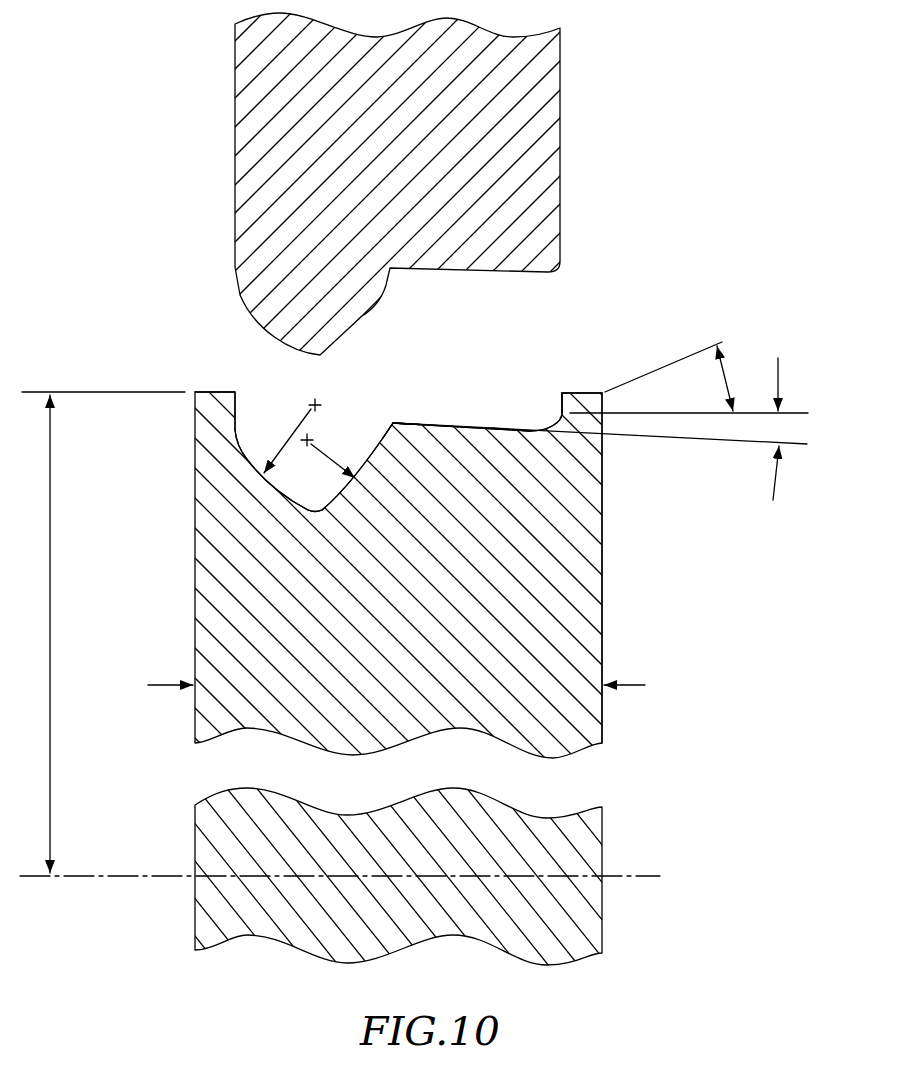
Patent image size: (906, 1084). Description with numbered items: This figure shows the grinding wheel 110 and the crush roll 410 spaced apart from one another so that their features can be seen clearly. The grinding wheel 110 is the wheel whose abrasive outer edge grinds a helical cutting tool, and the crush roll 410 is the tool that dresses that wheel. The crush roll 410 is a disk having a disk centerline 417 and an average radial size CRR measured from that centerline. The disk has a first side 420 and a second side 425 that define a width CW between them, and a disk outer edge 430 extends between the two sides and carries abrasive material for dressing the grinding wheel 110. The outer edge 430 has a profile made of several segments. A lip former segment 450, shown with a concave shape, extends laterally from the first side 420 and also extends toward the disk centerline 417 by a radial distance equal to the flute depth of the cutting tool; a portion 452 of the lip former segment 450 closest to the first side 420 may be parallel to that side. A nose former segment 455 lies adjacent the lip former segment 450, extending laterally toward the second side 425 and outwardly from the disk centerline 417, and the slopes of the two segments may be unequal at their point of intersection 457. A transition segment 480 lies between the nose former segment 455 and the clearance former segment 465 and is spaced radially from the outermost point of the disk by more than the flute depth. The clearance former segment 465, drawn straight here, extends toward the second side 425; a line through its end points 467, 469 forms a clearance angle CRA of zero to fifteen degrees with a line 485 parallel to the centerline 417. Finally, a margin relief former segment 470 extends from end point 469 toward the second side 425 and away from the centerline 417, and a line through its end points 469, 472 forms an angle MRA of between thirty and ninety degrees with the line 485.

The grinding wheel 110 is at (561, 122).
The crush roll 410 is at (676, 627).
The disk centerline 417 is at (628, 876).
The first side 420 is at (195, 508).
The second side 425 is at (602, 583).
The disk outer edge 430 is at (228, 340).
The lip former segment 450 is at (243, 445).
The portion of the lip former segment 452 is at (240, 408).
The nose former segment 455 is at (374, 457).
The point of intersection 457 is at (322, 510).
The clearance former segment 465 is at (438, 426).
The end point of the clearance former segment 467 is at (394, 426).
The end point 469 is at (508, 428).
The margin relief former segment 470 is at (546, 425).
The end point of the margin relief former segment 472 is at (563, 413).
The transition segment 480 is at (393, 424).
The line parallel to the disk centerline 485 is at (796, 412).
The margin relief angle MRA is at (733, 378).
The clearance angle CRA is at (782, 425).
The width CW is at (418, 686).
The average radial size CRR is at (103, 632).